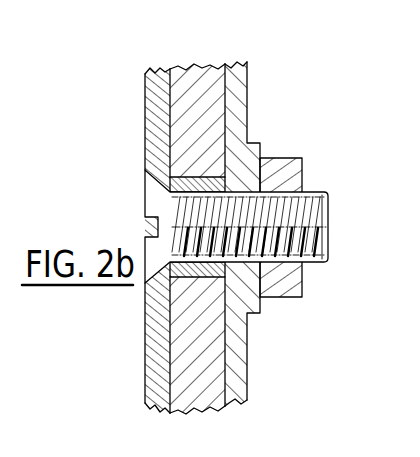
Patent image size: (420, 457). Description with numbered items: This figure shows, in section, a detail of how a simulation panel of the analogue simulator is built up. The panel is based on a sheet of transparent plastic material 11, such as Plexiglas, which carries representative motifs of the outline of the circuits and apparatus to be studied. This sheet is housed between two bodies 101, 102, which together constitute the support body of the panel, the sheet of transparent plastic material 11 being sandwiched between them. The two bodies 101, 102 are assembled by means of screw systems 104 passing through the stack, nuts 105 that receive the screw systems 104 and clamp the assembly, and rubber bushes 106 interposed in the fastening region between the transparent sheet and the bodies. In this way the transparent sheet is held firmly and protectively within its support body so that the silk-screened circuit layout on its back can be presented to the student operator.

The sheet of transparent plastic material 11 is at (195, 100).
The body 101 is at (146, 362).
The body 102 is at (247, 84).
The screw system 104 is at (318, 265).
The nut 105 is at (287, 163).
The rubber bush 106 is at (183, 177).